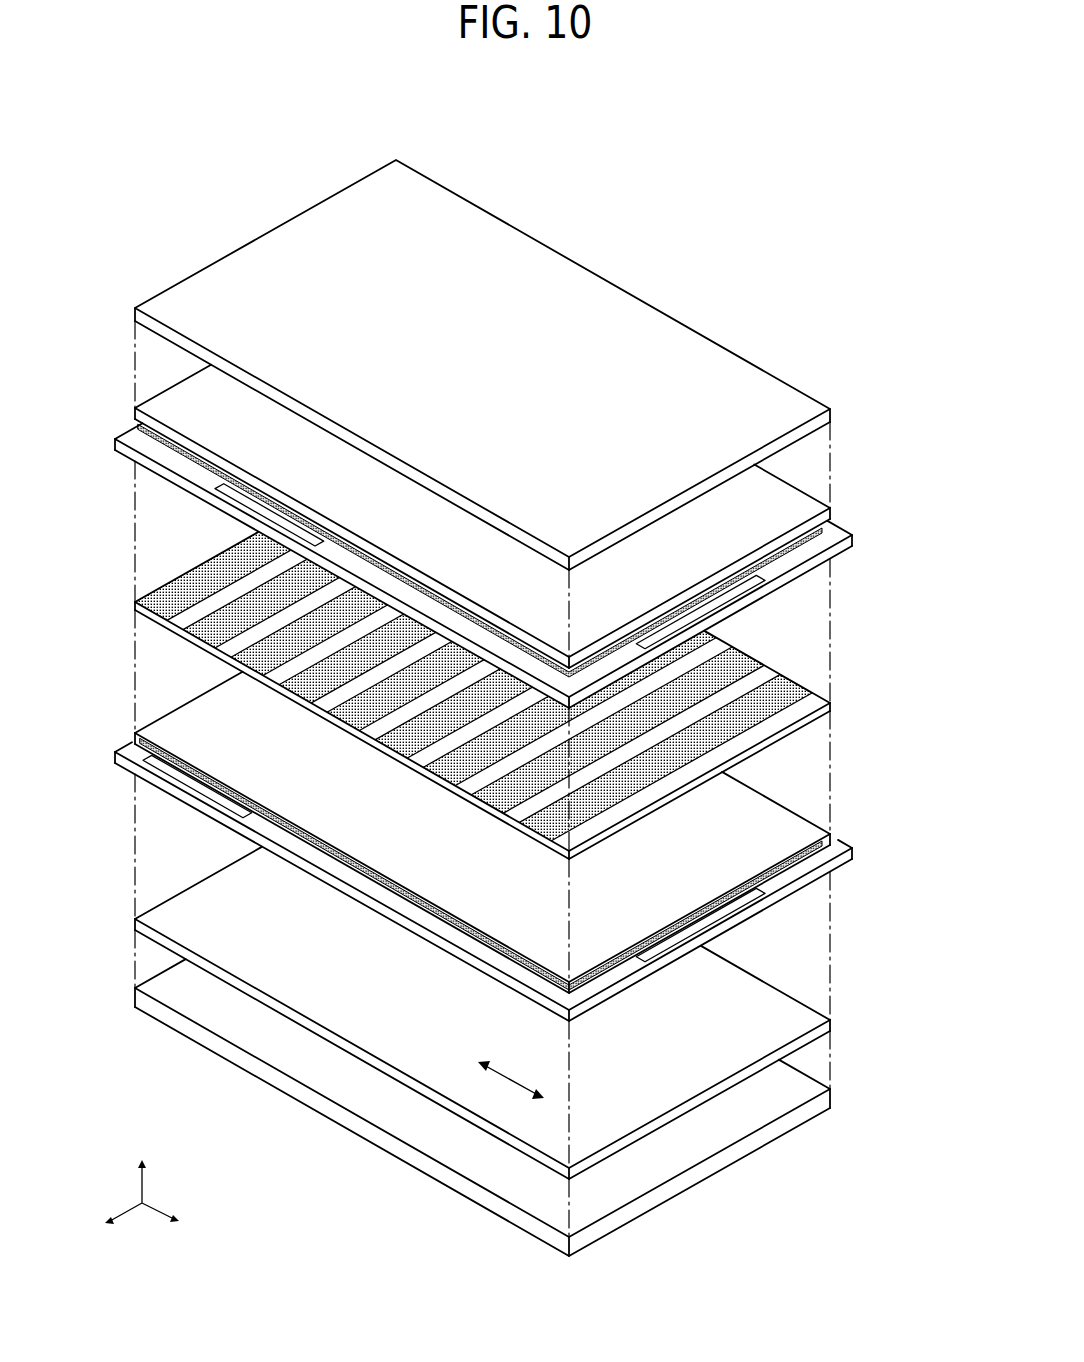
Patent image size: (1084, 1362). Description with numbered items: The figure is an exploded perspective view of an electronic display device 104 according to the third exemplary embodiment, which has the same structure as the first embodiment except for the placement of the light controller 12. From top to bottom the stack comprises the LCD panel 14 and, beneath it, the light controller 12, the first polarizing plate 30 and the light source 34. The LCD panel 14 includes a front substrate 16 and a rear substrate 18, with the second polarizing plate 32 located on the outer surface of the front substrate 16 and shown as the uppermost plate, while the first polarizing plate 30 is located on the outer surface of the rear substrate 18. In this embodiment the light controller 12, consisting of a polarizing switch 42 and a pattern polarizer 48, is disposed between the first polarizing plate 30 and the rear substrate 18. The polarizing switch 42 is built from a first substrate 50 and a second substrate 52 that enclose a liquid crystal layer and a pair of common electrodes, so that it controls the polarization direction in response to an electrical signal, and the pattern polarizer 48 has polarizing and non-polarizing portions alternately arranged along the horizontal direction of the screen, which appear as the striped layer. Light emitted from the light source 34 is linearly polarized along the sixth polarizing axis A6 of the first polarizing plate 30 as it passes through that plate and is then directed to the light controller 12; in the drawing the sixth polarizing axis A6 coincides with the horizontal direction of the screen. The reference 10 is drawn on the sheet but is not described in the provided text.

The electronic display device 104 is at (552, 166).
The second polarizing plate 32 is at (737, 358).
The front substrate 16 is at (162, 403).
The rear substrate 18 is at (133, 444).
The LCD panel 14 is at (467, 565).
The touch panel 10 is at (500, 529).
The second substrate 52 is at (184, 712).
The first substrate 50 is at (132, 762).
The pattern polarizer 48 is at (846, 703).
The light controller 12 is at (552, 723).
The polarizing switch 42 is at (847, 828).
The first polarizing plate 30 is at (718, 1065).
The light source 34 is at (687, 1180).
The sixth polarizing axis A6 is at (510, 1079).